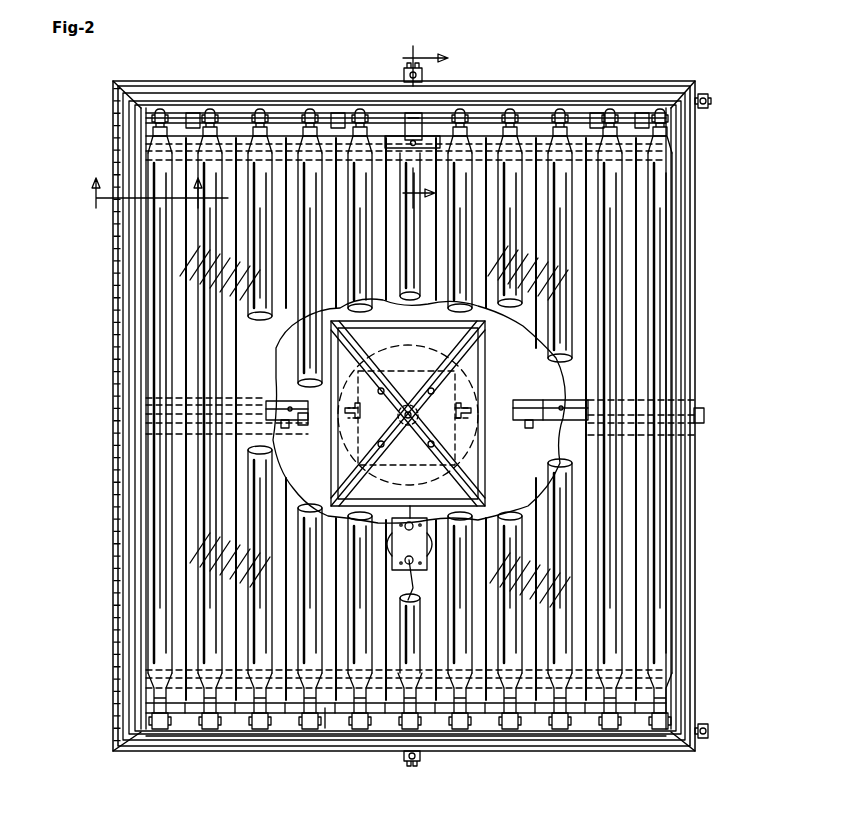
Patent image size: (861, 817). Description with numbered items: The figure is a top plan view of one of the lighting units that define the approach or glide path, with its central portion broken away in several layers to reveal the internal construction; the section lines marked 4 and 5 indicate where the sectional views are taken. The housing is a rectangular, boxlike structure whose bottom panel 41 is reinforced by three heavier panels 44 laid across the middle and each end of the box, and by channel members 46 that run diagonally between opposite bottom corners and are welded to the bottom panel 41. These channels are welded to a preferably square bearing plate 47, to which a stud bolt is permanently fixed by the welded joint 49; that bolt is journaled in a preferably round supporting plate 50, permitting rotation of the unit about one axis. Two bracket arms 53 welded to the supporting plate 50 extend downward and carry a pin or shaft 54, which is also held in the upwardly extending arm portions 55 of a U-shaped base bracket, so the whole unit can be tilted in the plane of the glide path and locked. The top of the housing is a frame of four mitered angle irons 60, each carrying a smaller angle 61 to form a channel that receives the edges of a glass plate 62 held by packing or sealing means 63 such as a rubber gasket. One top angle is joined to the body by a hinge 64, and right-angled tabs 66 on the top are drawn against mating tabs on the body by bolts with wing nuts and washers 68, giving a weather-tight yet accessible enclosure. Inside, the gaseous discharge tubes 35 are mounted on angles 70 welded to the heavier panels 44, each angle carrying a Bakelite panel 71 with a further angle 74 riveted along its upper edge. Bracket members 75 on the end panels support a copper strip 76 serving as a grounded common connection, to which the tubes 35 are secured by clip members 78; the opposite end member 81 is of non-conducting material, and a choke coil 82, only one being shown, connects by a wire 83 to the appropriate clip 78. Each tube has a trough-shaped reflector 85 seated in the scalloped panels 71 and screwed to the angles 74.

The section line 4- 4 is at (148, 195).
The section line 5- 5 is at (425, 124).
The gaseous discharge tubes 35 is at (142, 320).
The bottom panel 41 is at (505, 378).
The heavier panels 44 is at (292, 392).
The channel members 46 is at (470, 325).
The bearing plate 47 is at (352, 345).
The welded joint 49 is at (407, 431).
The supporting plate 50 is at (408, 400).
The bracket arms 53 is at (468, 428).
The pin or shaft 54 is at (406, 407).
The upwardly extending arm portions 55 is at (426, 439).
The angle irons 60 is at (681, 126).
The smaller angle 61 is at (676, 150).
The glass plate 62 is at (664, 180).
The packing or sealing means 63 is at (670, 212).
The hinge 64 is at (107, 108).
The right-angled tabs 66 is at (399, 60).
The wing nuts and washers 68 is at (414, 66).
The angle 70 is at (296, 412).
The panel 71 is at (278, 420).
The angle 74 is at (290, 393).
The bracket members 75 is at (185, 104).
The strip 76 is at (375, 108).
The clip members 78 is at (347, 105).
The non-conducting member 81 is at (572, 715).
The choke coil 82 is at (386, 510).
The wire 83 is at (403, 565).
The reflector 85 is at (432, 243).